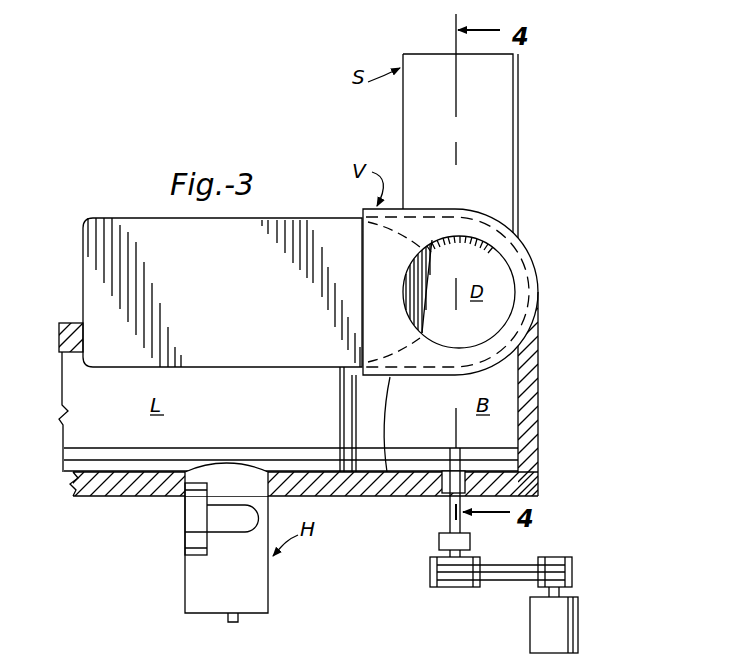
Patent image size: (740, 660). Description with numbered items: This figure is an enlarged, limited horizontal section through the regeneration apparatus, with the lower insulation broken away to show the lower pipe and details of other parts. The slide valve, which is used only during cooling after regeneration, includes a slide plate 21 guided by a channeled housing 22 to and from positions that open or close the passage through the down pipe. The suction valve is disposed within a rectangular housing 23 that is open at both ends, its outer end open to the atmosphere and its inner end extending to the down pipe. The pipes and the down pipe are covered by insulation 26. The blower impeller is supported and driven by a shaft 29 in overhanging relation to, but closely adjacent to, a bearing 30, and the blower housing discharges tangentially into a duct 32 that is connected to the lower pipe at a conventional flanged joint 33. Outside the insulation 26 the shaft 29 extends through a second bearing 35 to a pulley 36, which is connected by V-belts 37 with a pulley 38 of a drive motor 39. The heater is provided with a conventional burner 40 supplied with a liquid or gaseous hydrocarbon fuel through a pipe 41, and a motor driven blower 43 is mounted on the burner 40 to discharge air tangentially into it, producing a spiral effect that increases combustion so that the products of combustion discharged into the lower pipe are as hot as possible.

The slide plate 21 is at (228, 280).
The channeled housing 22 is at (536, 268).
The rectangular housing 23 is at (519, 113).
The insulation 26 is at (62, 322).
The shaft 29 is at (449, 524).
The bearing 30 is at (452, 482).
The duct 32 is at (389, 410).
The flanged joint 33 is at (342, 415).
The second bearing 35 is at (438, 541).
The pulley 36 is at (446, 588).
The V-belts 37 is at (522, 552).
The pulley 38 is at (538, 590).
The drive motor 39 is at (530, 631).
The burner 40 is at (185, 588).
The pipe 41 is at (240, 622).
The motor driven blower 43 is at (188, 536).